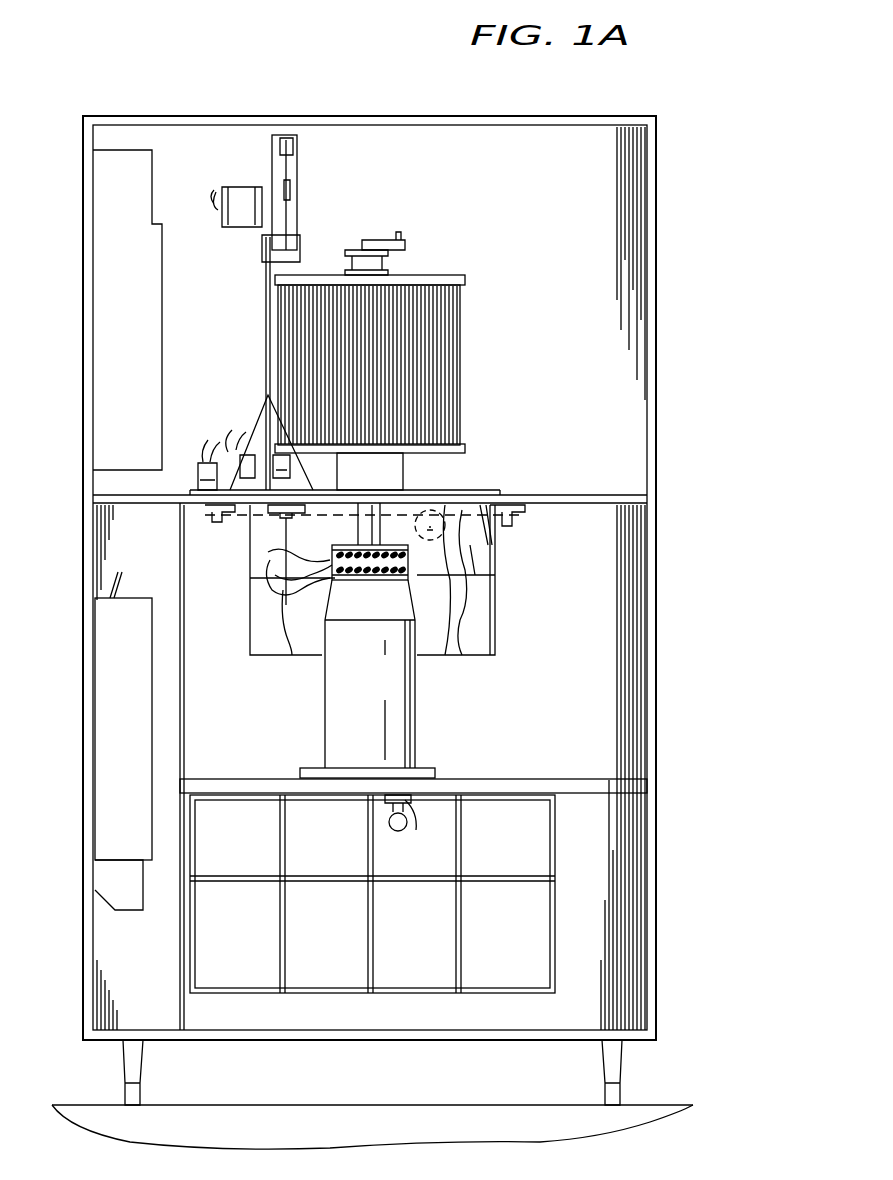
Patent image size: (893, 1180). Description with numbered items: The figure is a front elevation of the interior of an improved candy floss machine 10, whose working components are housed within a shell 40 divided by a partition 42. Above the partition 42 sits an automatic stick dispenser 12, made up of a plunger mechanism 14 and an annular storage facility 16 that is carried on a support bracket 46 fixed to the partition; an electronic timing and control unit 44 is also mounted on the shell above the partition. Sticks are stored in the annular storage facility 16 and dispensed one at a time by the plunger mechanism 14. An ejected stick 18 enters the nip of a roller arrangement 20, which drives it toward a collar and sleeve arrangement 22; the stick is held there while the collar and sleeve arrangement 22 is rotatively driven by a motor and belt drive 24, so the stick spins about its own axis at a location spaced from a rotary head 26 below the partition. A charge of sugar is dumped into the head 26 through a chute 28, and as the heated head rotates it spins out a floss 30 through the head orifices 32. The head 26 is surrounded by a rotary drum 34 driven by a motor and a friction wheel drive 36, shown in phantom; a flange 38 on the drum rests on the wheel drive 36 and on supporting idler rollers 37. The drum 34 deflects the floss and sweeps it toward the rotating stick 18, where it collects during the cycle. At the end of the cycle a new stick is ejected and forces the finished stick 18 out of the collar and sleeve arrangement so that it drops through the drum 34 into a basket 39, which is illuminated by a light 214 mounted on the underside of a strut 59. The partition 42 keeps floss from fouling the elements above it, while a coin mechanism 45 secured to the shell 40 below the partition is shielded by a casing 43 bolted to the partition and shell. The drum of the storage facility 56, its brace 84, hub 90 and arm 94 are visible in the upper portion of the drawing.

The candy floss machine 10 is at (675, 146).
The automatic stick dispenser 12 is at (540, 202).
The plunger mechanism 14 is at (310, 188).
The annular storage facility 16 is at (393, 322).
The stick 18 is at (285, 603).
The roller arrangement 20 is at (318, 466).
The collar and sleeve arrangement 22 is at (275, 518).
The motor and belt drive 24 is at (192, 470).
The rotary head 26 is at (440, 608).
The chute 28 is at (375, 528).
The floss 30 is at (305, 595).
The head orifices 32 is at (403, 562).
The rotary drum 34 is at (492, 618).
The friction wheel drive 36 is at (485, 548).
The idler rollers 37 is at (522, 520).
The flange 38 is at (500, 510).
The basket 39 is at (560, 865).
The shell 40 is at (90, 557).
The partition 42 is at (608, 500).
The casing 43 is at (184, 690).
The electronic timing and control unit 44 is at (148, 330).
The coin mechanism 45 is at (100, 686).
The support bracket 46 is at (440, 502).
The roasting drum 56 is at (452, 366).
The strut 59 is at (522, 780).
The support brace 84 is at (264, 378).
The hub 90 is at (348, 250).
The arm 94 is at (383, 240).
The light 214 is at (420, 829).